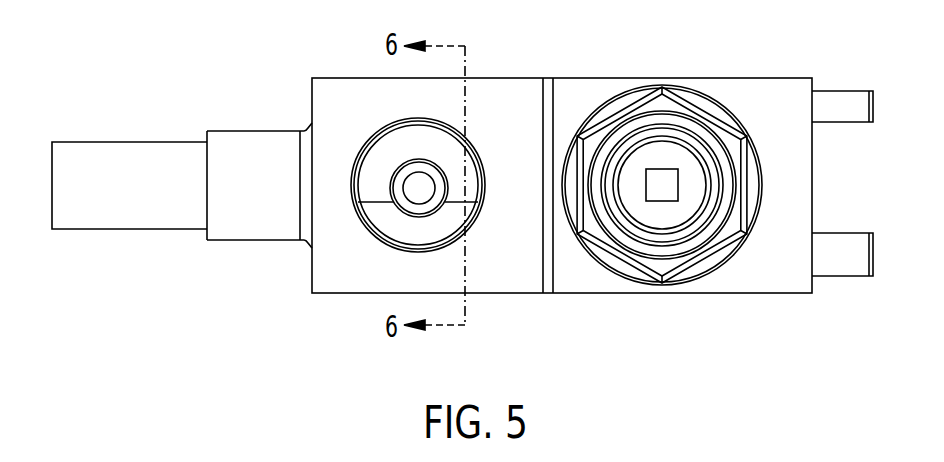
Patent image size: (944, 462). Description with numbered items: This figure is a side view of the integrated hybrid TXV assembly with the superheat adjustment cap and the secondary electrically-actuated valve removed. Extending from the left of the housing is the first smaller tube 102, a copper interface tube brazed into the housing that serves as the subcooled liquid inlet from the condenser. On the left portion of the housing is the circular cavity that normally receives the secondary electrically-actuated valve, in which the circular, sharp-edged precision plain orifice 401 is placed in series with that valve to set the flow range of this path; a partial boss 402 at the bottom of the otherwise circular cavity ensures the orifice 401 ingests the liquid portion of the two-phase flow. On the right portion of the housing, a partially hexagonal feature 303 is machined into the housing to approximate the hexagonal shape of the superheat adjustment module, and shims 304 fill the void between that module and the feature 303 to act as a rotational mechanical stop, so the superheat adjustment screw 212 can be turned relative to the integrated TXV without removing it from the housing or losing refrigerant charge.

The first smaller tube 102 is at (153, 230).
The superheat adjustment screw 212 is at (673, 188).
The partially hexagonal feature 303 is at (700, 108).
The shims 304 is at (667, 276).
The precision plain orifice 401 is at (463, 198).
The partial boss 402 is at (383, 215).